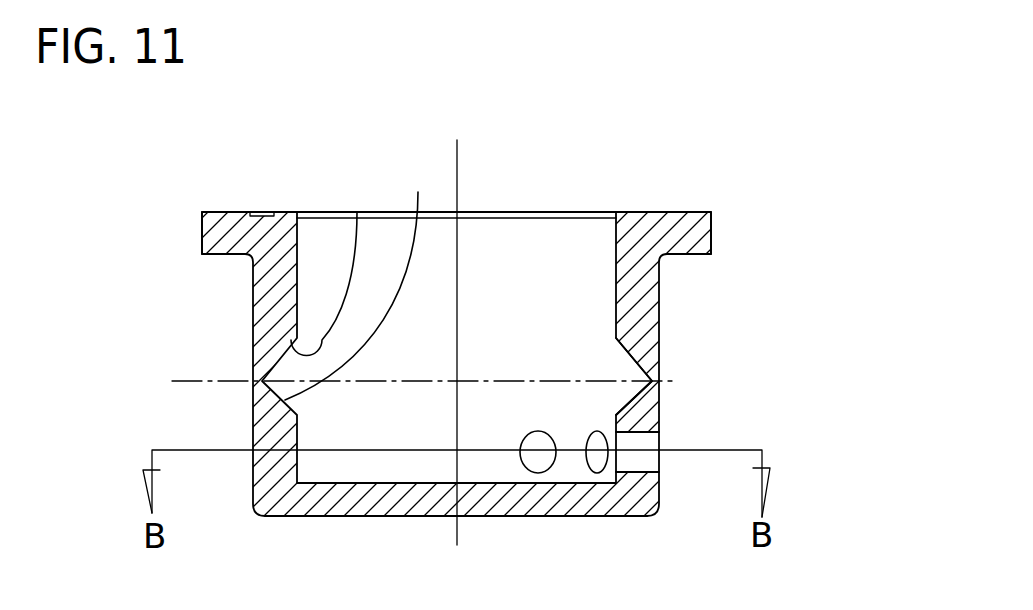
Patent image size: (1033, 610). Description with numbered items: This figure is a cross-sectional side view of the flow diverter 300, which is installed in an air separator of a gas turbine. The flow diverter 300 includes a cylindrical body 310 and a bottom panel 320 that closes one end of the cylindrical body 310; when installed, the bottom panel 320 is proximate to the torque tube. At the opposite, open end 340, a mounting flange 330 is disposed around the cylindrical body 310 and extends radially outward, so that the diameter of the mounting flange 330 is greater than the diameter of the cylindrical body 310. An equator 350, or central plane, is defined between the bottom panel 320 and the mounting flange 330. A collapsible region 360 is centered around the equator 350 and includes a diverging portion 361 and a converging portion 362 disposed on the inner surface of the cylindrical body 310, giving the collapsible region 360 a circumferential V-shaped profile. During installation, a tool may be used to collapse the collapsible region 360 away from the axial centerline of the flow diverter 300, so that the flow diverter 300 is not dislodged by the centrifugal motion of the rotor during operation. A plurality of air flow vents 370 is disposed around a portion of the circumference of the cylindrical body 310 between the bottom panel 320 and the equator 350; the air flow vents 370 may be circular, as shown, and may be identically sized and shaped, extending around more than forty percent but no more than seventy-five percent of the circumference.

The flow diverter 300 is at (443, 313).
The cylindrical body 310 is at (672, 306).
The bottom panel 320 is at (296, 503).
The mounting flange 330 is at (676, 212).
The open end 340 is at (533, 235).
The equator 350 is at (188, 381).
The collapsible region 360 is at (675, 342).
The diverging portion 361 is at (357, 212).
The converging portion 362 is at (367, 283).
The air flow vents 370 is at (538, 465).